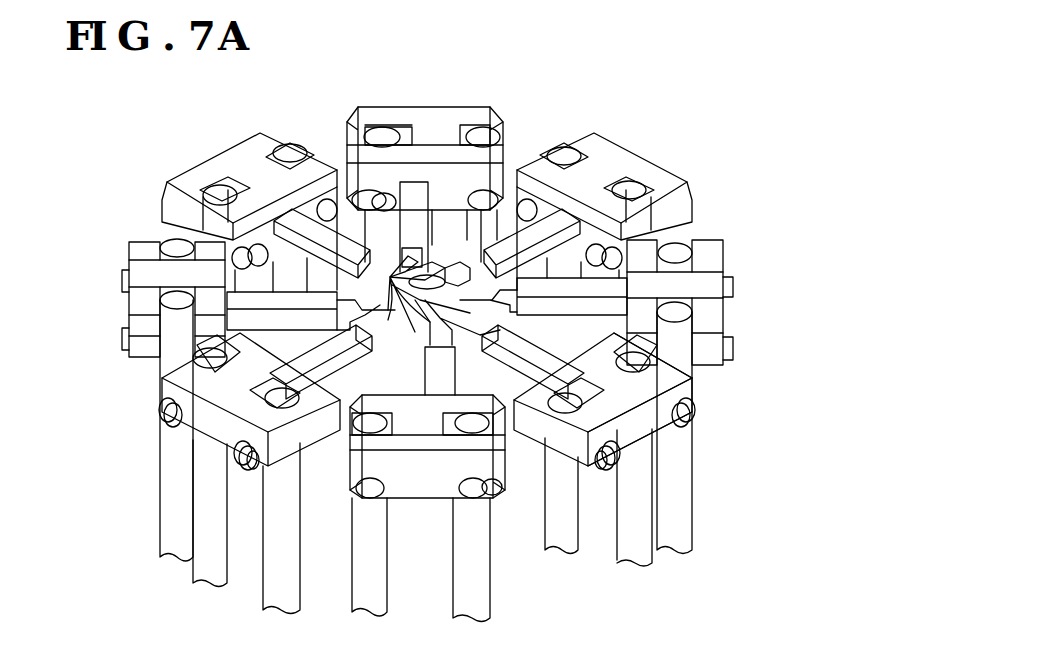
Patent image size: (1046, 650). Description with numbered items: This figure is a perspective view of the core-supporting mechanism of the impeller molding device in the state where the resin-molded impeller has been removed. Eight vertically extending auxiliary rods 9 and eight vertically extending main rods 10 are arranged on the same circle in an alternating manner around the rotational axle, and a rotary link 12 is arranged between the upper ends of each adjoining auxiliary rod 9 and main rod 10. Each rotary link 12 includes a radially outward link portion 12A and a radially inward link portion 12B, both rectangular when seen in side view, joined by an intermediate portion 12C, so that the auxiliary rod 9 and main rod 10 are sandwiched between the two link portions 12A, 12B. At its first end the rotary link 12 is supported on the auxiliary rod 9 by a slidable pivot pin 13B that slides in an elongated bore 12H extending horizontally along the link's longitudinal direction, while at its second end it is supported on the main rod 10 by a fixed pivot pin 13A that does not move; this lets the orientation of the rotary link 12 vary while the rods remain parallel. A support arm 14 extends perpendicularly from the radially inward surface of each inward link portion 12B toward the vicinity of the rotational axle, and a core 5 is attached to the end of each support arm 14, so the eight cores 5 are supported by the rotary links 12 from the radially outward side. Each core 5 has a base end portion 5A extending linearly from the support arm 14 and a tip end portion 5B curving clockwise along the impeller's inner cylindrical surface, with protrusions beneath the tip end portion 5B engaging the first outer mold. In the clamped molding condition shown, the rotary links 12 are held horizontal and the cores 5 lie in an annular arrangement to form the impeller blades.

The core 5 is at (468, 320).
The base end portion 5A is at (396, 325).
The tip end portion 5B is at (392, 276).
The auxiliary rod 9 is at (685, 548).
The main rod 10 is at (563, 545).
The rotary link 12 is at (800, 452).
The radially outward link portion 12A is at (690, 398).
The radially inward link portion 12B is at (690, 356).
The intermediate portion 12C is at (690, 386).
The elongated bore 12H is at (688, 452).
The fixed pivot pin 13A is at (600, 460).
The slidable pivot pin 13B is at (680, 462).
The support arm 14 is at (548, 310).